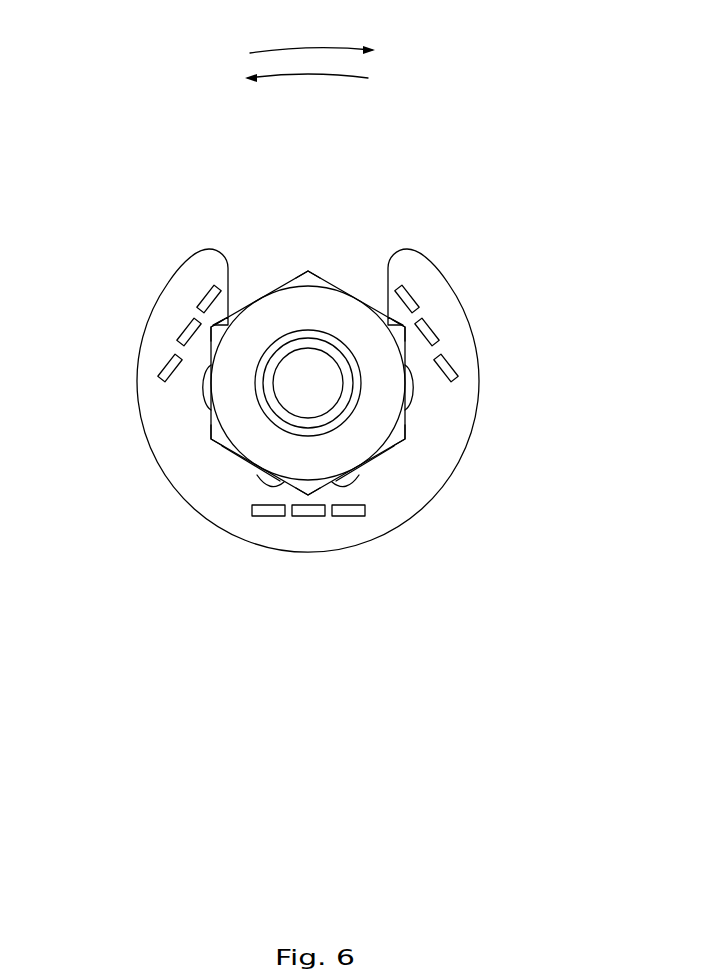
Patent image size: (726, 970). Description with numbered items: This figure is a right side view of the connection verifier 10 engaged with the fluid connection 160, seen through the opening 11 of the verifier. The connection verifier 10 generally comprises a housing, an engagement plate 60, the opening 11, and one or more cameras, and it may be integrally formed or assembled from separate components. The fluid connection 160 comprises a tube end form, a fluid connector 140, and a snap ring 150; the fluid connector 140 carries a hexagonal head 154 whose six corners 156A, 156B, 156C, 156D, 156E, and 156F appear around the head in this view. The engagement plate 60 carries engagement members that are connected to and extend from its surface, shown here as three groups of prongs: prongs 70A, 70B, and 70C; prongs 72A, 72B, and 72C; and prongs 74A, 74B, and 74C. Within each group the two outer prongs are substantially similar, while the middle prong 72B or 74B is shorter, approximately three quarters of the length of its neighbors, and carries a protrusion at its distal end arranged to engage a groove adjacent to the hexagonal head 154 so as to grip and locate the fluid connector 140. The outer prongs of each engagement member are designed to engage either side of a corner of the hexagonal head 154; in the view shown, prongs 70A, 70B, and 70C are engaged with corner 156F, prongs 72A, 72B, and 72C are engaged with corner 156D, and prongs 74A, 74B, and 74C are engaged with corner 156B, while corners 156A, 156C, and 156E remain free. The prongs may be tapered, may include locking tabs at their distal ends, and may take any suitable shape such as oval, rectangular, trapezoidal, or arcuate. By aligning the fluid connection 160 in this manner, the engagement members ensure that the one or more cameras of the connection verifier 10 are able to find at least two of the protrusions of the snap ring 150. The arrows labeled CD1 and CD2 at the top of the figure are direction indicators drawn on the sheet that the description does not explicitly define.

The connection verifier 10 is at (484, 403).
The opening 11 is at (283, 200).
The engagement plate 60 is at (434, 432).
The prong 70A is at (203, 298).
The prong 70B is at (186, 332).
The prong 70C is at (167, 366).
The prong 72A is at (264, 514).
The prong 72B is at (309, 514).
The prong 72C is at (346, 514).
The prong 74A is at (448, 369).
The prong 74B is at (428, 333).
The prong 74C is at (410, 297).
The fluid connector 140 is at (233, 383).
The snap ring 150 is at (237, 468).
The hexagonal head 154 is at (324, 270).
The first corner 156A is at (305, 268).
The corner 156B is at (399, 330).
The third corner 156C is at (400, 436).
The corner 156D is at (318, 454).
The fifth corner 156E is at (208, 440).
The corner 156F is at (214, 328).
The fluid connection 160 is at (243, 407).
The first circumferential direction CD1 is at (345, 78).
The second circumferential direction CD2 is at (318, 48).